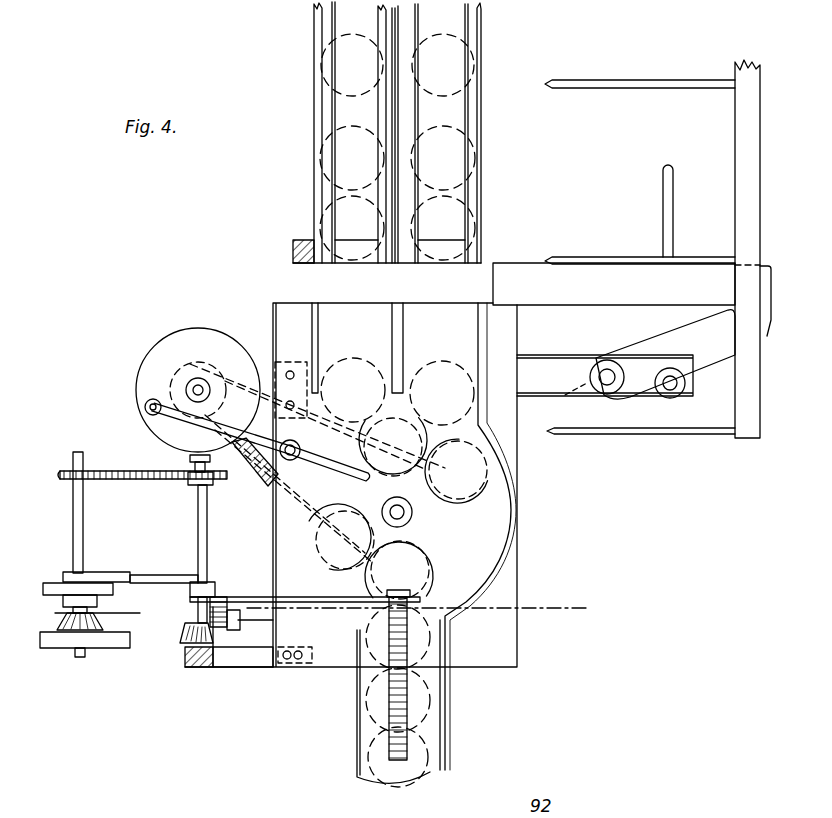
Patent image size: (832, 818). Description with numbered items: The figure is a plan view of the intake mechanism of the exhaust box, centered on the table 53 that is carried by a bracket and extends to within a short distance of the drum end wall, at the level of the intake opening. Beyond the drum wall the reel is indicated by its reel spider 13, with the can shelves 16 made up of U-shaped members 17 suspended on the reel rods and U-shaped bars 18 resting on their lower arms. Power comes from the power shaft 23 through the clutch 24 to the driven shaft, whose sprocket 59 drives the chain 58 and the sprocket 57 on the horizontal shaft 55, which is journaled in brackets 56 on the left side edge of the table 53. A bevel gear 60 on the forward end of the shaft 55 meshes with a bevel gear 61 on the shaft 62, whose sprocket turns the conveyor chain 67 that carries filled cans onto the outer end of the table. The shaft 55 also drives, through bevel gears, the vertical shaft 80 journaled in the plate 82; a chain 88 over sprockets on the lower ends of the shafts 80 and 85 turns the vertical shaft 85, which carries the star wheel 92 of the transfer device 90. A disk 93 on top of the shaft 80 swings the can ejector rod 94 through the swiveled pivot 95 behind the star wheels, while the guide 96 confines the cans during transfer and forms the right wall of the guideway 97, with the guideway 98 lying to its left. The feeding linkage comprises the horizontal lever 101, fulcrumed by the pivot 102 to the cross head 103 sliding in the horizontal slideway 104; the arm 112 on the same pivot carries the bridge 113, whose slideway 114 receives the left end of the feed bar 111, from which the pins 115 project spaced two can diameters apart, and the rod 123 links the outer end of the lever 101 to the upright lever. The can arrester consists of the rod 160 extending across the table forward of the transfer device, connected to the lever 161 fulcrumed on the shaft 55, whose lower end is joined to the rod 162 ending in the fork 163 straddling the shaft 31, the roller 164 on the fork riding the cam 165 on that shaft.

The reel spider 13 is at (311, 611).
The can shelves 16 is at (481, 168).
The U-shaped members 17 is at (293, 251).
The U-shaped bars 18 is at (317, 150).
The power shaft 23 is at (85, 657).
The clutch 24 is at (107, 603).
The shaft 31 is at (85, 528).
The table 53 is at (503, 630).
The horizontal shaft 55 is at (208, 550).
The brackets 56 is at (245, 672).
The sprocket 57 is at (185, 487).
The chain 58 is at (130, 471).
The sprocket 59 is at (60, 474).
The bevel gear 60 is at (185, 637).
The bevel gear 61 is at (218, 605).
The shaft 62 is at (255, 620).
The conveyor chain 67 is at (407, 745).
The vertical shaft 80 is at (205, 392).
The plate 82 is at (263, 372).
The vertical shaft 85 is at (400, 512).
The chain 88 is at (262, 480).
The transfer device 90 is at (329, 473).
The star wheel 92 is at (398, 508).
The disk 93 is at (183, 340).
The can ejector rod 94 is at (322, 462).
The swiveled pivot 95 is at (295, 460).
The guide 96 is at (508, 470).
The guideway 97 is at (442, 375).
The guideway 98 is at (353, 376).
The horizontal lever 101 is at (605, 375).
The pivot 102 is at (606, 385).
The cross head 103 is at (562, 402).
The horizontal slideway 104 is at (633, 398).
The feed bar 111 is at (748, 118).
The arm 112 is at (665, 354).
The bridge 113 is at (614, 284).
The slideway 114 is at (770, 268).
The pins 115 is at (690, 80).
The rod 123 is at (668, 220).
The rod 160 is at (292, 597).
The lever 161 is at (208, 585).
The rod 162 is at (165, 572).
The fork 163 is at (108, 572).
The roller 164 is at (108, 600).
The cam 165 is at (60, 595).